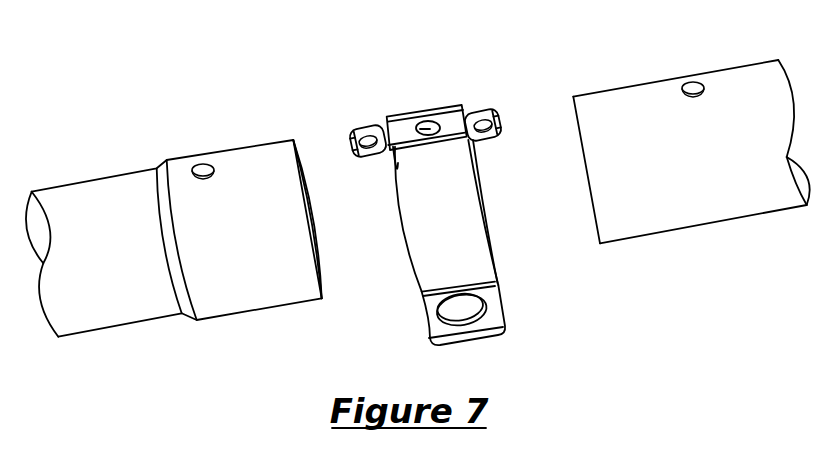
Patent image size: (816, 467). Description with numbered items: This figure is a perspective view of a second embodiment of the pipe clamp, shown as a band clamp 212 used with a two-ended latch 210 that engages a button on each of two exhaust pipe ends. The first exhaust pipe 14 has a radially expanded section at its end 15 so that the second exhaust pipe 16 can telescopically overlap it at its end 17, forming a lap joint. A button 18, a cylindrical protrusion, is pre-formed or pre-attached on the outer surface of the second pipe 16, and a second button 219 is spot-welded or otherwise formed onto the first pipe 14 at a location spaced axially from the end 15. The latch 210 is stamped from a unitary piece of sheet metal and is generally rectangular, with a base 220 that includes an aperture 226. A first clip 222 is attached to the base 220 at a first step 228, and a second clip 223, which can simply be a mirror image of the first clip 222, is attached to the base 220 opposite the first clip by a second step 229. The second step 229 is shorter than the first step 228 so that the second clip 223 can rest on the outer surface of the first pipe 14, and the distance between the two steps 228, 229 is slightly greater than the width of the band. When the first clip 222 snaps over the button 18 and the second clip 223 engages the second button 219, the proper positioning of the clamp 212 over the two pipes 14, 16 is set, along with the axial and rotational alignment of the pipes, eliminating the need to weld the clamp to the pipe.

The first exhaust pipe 14 is at (238, 283).
The end of first exhaust pipe 15 is at (322, 283).
The second exhaust pipe 16 is at (670, 213).
The end of second exhaust pipe 17 is at (605, 173).
The button 18 is at (693, 80).
The second button 219 is at (201, 162).
The latch 210 is at (448, 185).
The band clamp 212 is at (470, 258).
The base 220 is at (448, 120).
The first clip 222 is at (488, 107).
The second clip 223 is at (362, 127).
The aperture 226 is at (398, 163).
The first step 228 is at (495, 148).
The second step 229 is at (372, 163).